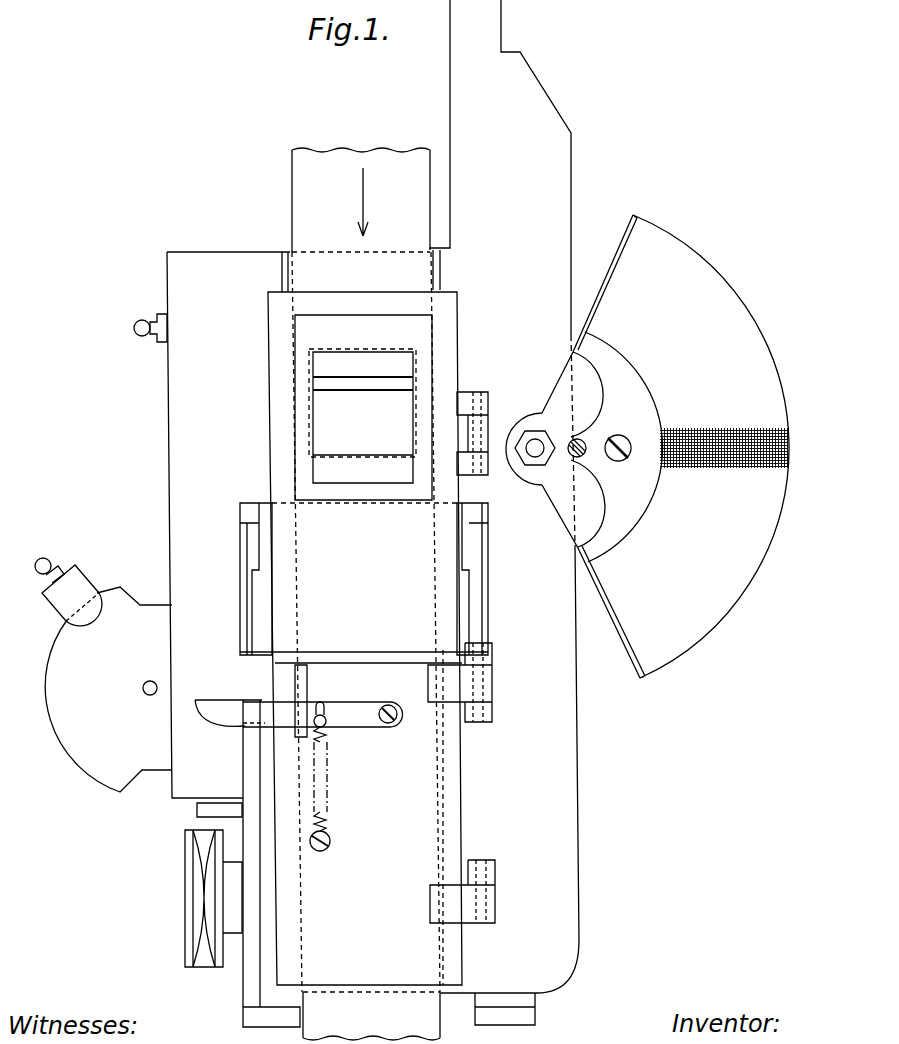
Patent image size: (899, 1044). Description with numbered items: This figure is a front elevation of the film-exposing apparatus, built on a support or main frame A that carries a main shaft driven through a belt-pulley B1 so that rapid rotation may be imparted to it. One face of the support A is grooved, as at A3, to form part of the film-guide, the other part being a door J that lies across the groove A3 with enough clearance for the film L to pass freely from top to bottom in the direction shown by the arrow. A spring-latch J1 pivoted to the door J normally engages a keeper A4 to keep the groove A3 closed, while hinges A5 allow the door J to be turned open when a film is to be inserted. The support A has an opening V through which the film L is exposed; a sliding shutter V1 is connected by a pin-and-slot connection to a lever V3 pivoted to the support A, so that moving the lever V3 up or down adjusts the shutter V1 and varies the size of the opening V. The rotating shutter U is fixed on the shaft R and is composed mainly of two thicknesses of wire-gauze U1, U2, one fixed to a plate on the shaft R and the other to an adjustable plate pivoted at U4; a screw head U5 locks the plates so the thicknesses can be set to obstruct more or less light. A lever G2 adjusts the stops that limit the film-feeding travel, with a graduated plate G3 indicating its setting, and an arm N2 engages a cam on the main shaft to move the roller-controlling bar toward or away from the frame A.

The support or main frame A is at (373, 513).
The film L is at (292, 205).
The groove A3 is at (437, 280).
The keeper A4 is at (244, 722).
The hinges A5 is at (489, 404).
The door J is at (272, 424).
The spring-latch J1 is at (322, 758).
The opening V is at (362, 416).
The shutter V1 is at (357, 385).
The lever V3 is at (562, 508).
The shaft R is at (538, 440).
The shutter U is at (681, 456).
The thickness of wire-gauze U1 is at (633, 666).
The thickness of wire-gauze U2 is at (606, 654).
The pivot U4 is at (588, 444).
The screw head U5 is at (643, 450).
The lever G2 is at (85, 585).
The graduated plate G3 is at (108, 706).
The arm N2 is at (197, 812).
The belt-pulley B1 is at (186, 893).